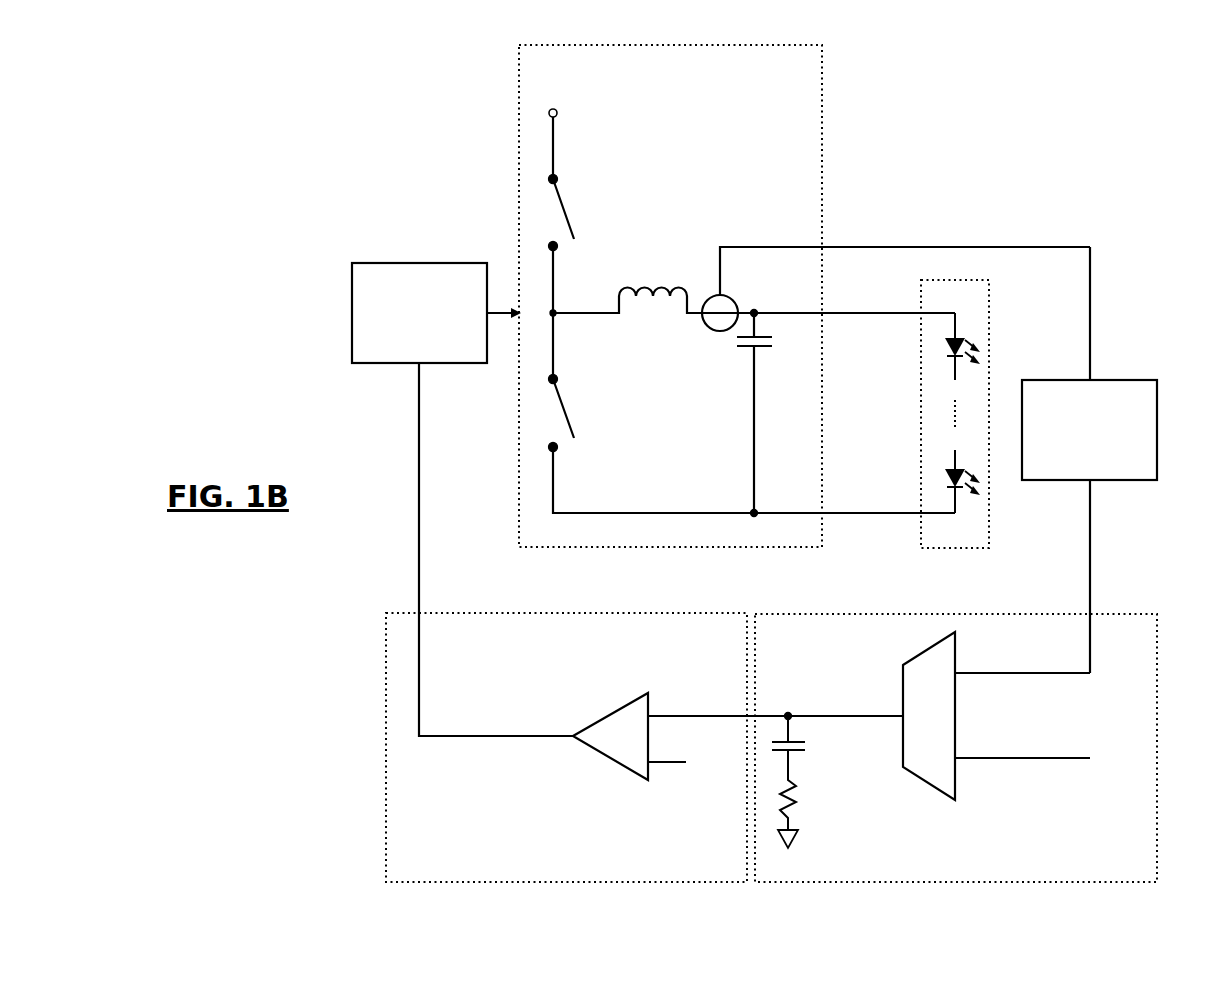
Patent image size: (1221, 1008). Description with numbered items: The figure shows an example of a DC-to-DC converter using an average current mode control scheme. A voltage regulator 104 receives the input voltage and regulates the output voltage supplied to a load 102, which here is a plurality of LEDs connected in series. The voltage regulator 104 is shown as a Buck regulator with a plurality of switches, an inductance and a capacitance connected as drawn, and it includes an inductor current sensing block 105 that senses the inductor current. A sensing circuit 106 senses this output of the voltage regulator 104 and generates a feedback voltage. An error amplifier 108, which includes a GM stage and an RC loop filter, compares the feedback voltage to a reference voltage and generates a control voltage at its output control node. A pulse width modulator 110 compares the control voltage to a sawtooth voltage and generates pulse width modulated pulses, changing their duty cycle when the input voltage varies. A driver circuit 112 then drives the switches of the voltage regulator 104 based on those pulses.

The load 102 is at (990, 345).
The voltage regulator 104 is at (804, 296).
The inductor current sensing block 105 is at (734, 300).
The sensing circuit 106 is at (1157, 428).
The error amplifier 108 is at (1158, 749).
The pulse width modulator 110 is at (558, 613).
The driver circuit 112 is at (420, 263).